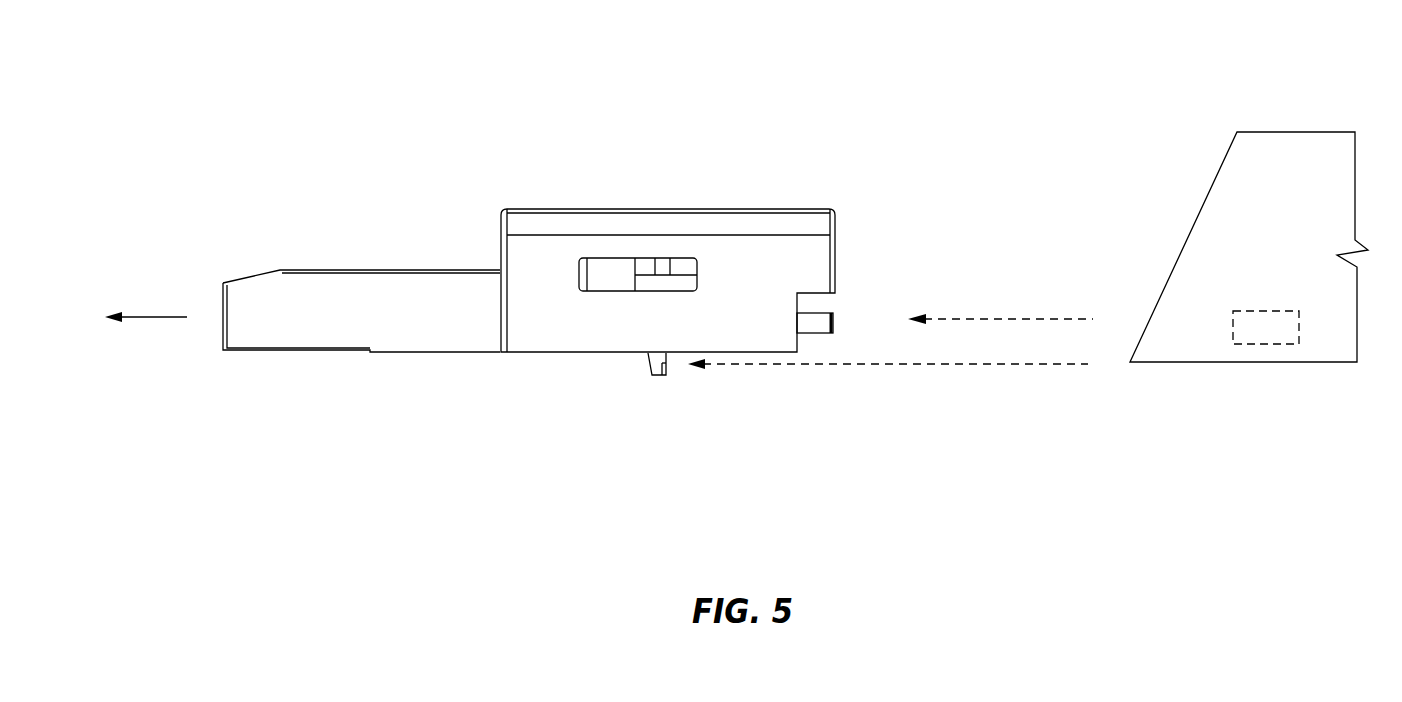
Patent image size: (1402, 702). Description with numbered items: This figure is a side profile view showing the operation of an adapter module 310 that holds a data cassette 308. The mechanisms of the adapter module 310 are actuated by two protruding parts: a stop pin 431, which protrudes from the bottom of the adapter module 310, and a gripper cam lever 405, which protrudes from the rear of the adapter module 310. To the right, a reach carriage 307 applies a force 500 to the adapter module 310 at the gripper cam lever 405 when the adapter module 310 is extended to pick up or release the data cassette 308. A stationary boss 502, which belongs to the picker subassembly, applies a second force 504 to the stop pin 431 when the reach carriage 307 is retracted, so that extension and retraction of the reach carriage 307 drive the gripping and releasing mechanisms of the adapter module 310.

The reach carriage 307 is at (1313, 145).
The data cassette 308 is at (288, 329).
The adapter module 310 is at (602, 330).
The gripper cam lever 405 is at (833, 322).
The stop pin 431 is at (665, 365).
The force 500 is at (1042, 319).
The stationary boss 502 is at (1257, 345).
The force 504 is at (905, 364).